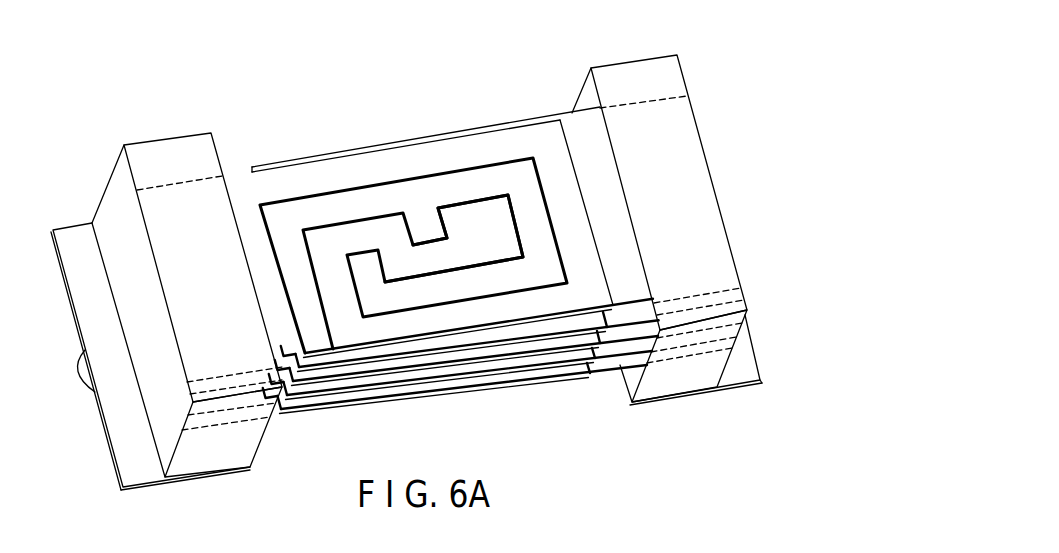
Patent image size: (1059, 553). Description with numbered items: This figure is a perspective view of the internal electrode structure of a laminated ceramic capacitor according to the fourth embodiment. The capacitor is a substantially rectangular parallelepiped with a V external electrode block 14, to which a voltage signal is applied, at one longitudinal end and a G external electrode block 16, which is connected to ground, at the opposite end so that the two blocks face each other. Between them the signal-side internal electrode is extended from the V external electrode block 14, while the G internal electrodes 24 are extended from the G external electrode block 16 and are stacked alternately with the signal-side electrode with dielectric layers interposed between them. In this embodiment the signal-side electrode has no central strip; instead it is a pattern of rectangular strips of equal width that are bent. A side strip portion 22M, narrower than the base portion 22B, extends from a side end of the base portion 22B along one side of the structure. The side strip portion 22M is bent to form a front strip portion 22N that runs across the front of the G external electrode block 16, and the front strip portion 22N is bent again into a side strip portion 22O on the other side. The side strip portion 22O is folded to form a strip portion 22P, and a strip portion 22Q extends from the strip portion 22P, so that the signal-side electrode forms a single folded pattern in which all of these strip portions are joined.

The V external electrode block 14 is at (171, 150).
The G external electrode block 16 is at (636, 73).
The base portion 22B is at (203, 304).
The side strip portion 22M is at (405, 157).
The front strip portion 22N is at (567, 208).
The side strip portion 22O is at (428, 330).
The strip portion 22P is at (333, 280).
The strip portion 22Q is at (497, 253).
The G internal electrodes 24 is at (622, 290).